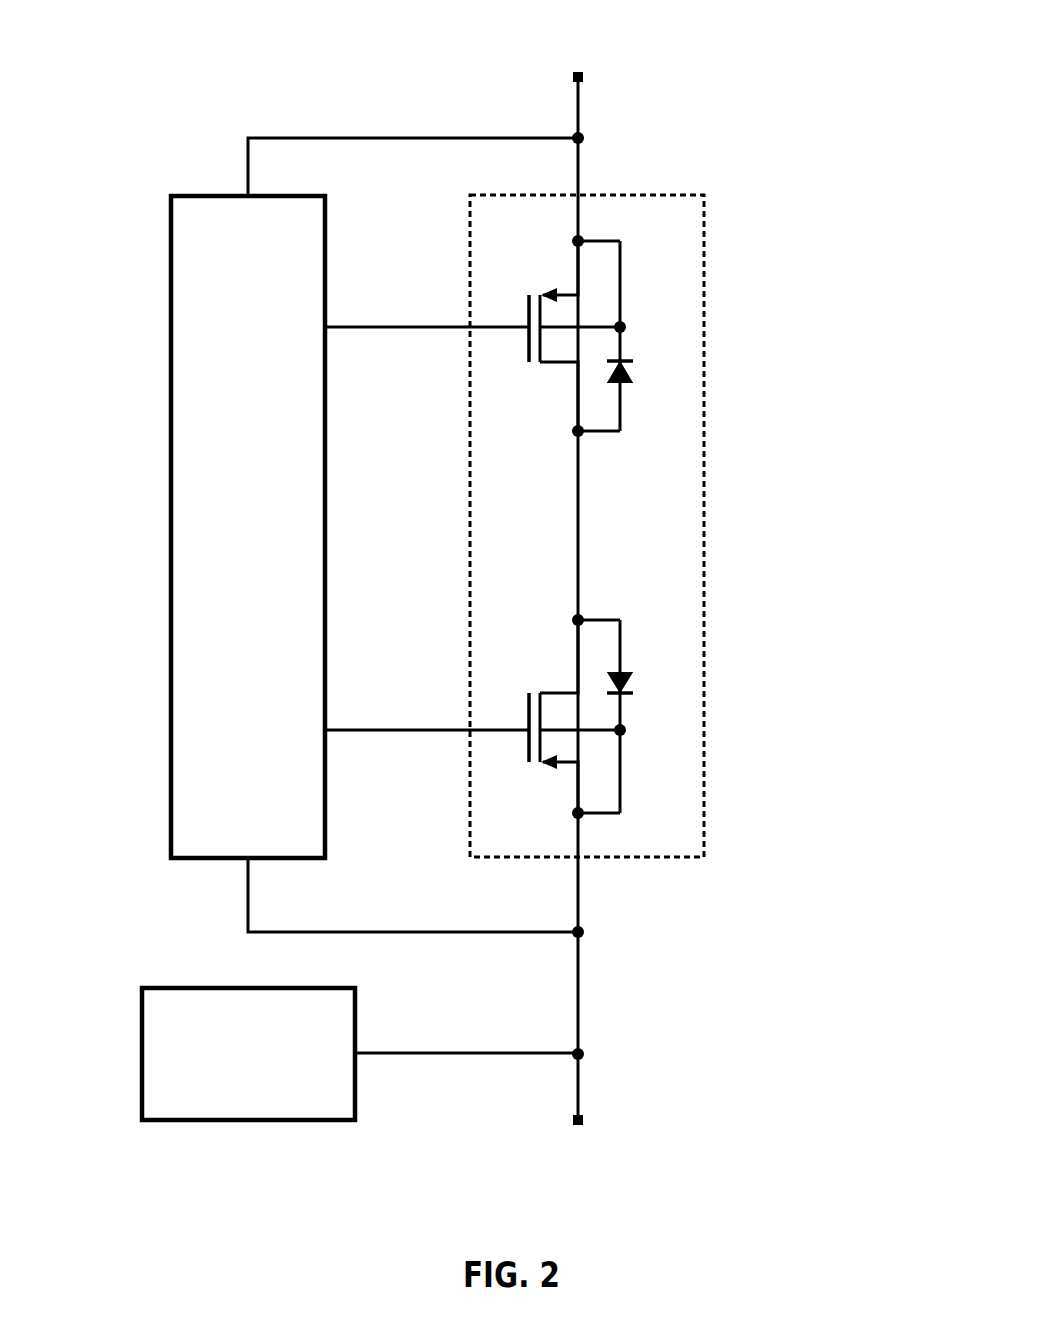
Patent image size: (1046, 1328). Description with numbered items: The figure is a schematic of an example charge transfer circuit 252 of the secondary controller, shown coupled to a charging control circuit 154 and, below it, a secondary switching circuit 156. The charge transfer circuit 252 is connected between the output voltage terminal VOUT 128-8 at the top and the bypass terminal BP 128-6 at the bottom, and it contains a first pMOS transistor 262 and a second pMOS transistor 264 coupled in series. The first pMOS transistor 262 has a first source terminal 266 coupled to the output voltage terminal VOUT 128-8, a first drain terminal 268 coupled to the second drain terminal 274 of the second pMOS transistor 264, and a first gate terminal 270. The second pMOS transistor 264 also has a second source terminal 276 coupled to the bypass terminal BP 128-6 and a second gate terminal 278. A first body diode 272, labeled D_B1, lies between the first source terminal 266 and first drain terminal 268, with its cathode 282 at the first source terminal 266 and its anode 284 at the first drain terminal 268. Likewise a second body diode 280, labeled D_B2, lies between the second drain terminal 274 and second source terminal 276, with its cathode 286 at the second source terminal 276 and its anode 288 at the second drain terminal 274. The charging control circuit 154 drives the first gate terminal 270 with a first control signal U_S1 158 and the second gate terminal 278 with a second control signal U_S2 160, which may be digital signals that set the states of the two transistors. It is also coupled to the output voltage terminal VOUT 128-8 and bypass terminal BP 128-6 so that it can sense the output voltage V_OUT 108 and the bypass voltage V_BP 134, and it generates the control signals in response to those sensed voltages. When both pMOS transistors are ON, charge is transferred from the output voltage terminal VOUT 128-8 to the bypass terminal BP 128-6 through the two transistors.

The output voltage 108 is at (596, 46).
The output voltage terminal 128-8 is at (572, 80).
The charging control circuit 154 is at (168, 198).
The secondary switching circuit 156 is at (136, 992).
The first control signal 158 is at (398, 304).
The second control signal 160 is at (398, 710).
The charge transfer circuit 252 is at (706, 212).
The first pMOS transistor 262 is at (536, 258).
The second pMOS transistor 264 is at (536, 644).
The first source terminal 266 is at (582, 240).
The first drain terminal 268 is at (582, 434).
The first gate terminal 270 is at (494, 327).
The first body diode 272 is at (688, 370).
The second drain terminal 274 is at (582, 619).
The second source terminal 276 is at (582, 816).
The second gate terminal 278 is at (494, 731).
The second body diode 280 is at (692, 682).
The cathode 282 is at (656, 345).
The anode 284 is at (628, 386).
The cathode 286 is at (628, 697).
The anode 288 is at (656, 657).
The bypass terminal 128-6 is at (572, 1118).
The bypass voltage 134 is at (562, 1160).